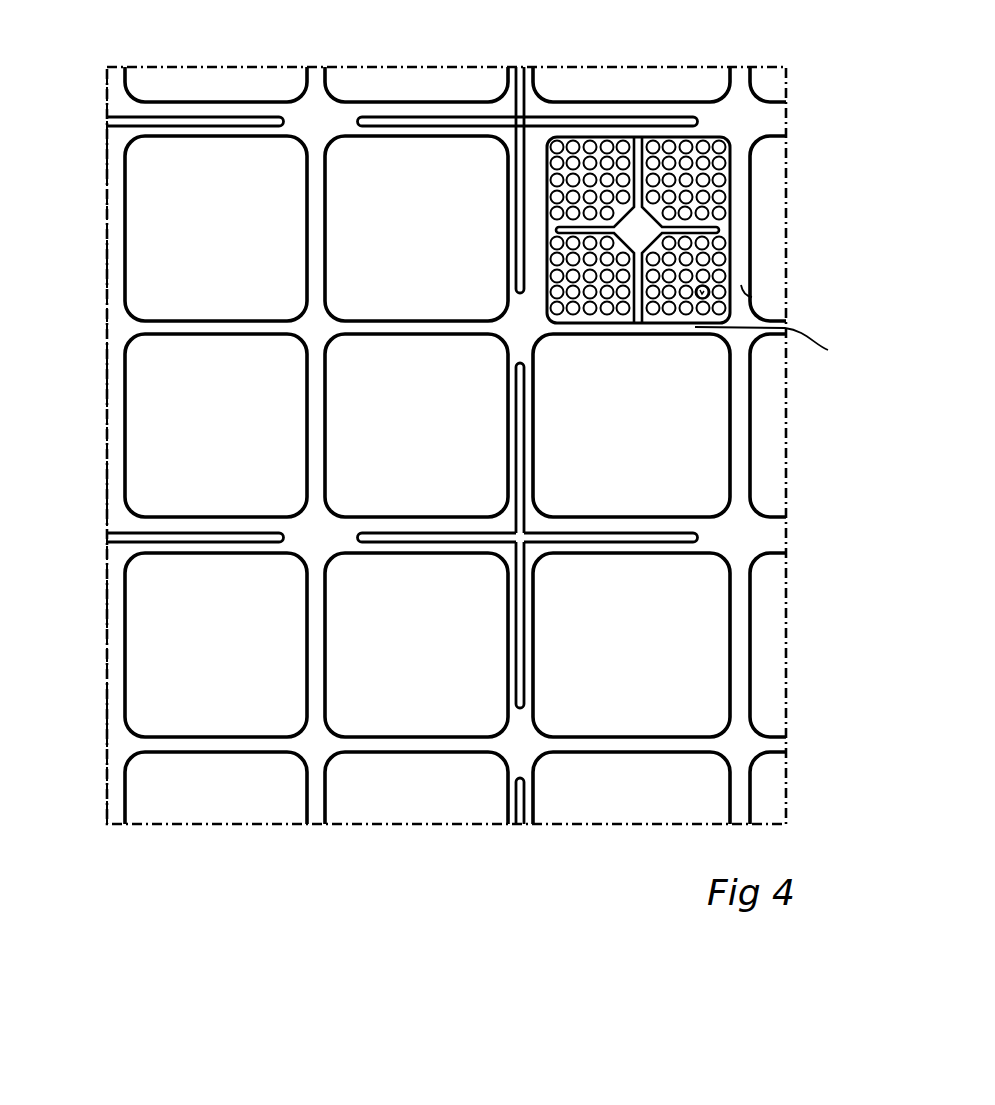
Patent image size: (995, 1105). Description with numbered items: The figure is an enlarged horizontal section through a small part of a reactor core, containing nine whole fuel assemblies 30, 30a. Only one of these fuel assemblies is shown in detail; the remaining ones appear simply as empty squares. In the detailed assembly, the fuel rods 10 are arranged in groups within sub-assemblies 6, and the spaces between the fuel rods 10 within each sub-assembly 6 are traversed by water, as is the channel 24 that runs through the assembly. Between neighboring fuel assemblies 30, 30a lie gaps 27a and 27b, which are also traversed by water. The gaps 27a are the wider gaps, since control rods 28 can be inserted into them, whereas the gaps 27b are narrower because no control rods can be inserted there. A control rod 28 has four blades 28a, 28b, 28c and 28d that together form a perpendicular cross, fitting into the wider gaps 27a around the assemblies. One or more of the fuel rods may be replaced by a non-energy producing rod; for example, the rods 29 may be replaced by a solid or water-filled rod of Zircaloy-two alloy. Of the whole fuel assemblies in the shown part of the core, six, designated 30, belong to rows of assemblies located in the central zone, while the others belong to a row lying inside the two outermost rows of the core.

The sub-assembly 6 is at (730, 178).
The fuel rod 10 is at (699, 234).
The channel 24 is at (636, 226).
The gap 27a is at (533, 143).
The gap 27b is at (752, 297).
The control rod 28 is at (402, 593).
The blade 28a is at (524, 423).
The blade 28b is at (607, 533).
The blade 28c is at (524, 642).
The blade 28d is at (437, 543).
The rod 29 is at (713, 304).
The fuel assembly 30 is at (352, 160).
The fuel assembly 30a is at (730, 270).